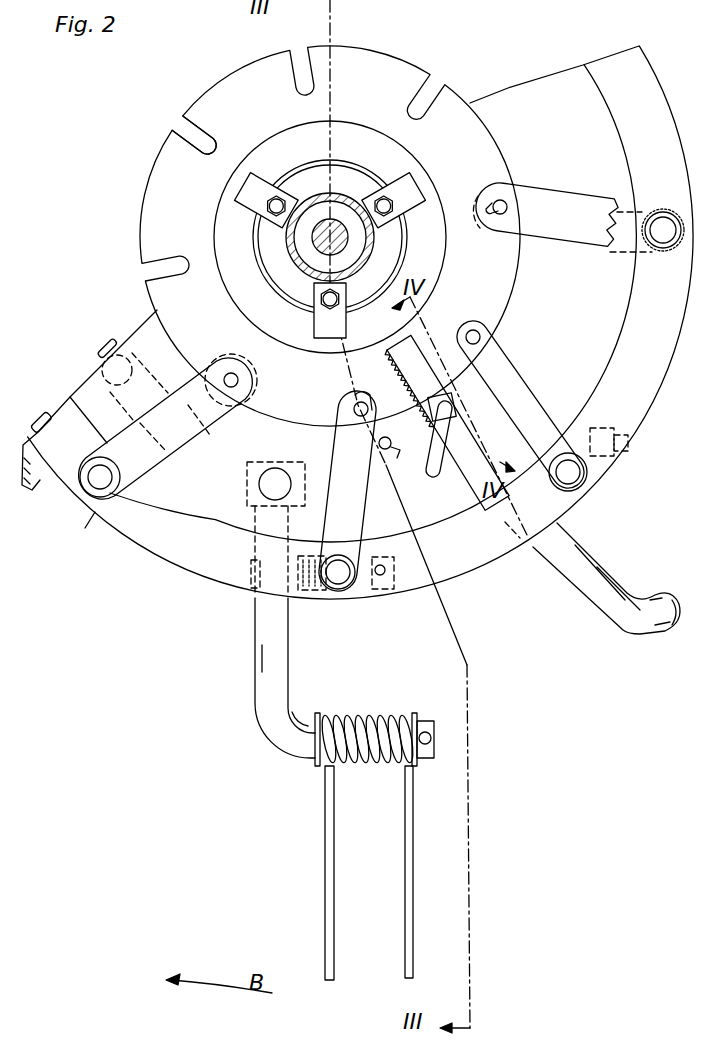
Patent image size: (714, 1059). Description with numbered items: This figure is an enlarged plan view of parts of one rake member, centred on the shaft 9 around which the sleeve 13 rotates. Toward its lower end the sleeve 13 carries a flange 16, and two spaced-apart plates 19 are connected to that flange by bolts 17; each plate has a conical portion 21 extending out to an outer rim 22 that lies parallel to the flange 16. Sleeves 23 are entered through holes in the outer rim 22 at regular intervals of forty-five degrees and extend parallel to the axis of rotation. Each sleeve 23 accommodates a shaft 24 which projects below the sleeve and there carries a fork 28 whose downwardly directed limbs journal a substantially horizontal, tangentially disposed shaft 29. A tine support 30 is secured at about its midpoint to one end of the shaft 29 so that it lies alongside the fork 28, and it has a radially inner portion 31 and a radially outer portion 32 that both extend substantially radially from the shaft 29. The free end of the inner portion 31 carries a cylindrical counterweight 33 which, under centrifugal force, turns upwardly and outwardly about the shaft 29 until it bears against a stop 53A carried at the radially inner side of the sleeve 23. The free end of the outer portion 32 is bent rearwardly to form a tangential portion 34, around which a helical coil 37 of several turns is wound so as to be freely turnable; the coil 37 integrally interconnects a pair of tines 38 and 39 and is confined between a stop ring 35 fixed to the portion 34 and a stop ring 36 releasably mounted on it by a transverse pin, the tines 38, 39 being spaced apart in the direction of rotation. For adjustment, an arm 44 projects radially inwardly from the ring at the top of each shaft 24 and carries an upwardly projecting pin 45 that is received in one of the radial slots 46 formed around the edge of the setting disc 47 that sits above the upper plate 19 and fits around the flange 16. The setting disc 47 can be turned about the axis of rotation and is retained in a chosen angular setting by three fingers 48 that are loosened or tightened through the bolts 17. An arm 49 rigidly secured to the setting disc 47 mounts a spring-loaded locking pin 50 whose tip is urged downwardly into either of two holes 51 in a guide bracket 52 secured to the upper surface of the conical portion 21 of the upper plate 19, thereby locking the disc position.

The shaft 9 is at (313, 238).
The sleeve 13 is at (318, 272).
The flange 16 is at (400, 247).
The bolts 17 is at (268, 231).
The plates 19 is at (138, 322).
The conical portion 21 is at (546, 92).
The outer rim 22 is at (676, 355).
The sleeve 23 is at (658, 250).
The shaft 24 is at (89, 531).
The fork 28 is at (370, 600).
The shaft 29 is at (615, 444).
The tine support 30 is at (254, 683).
The support portion 31 is at (66, 395).
The support portion 32 is at (585, 606).
The counterweight 33 is at (245, 466).
The portion 34 is at (436, 742).
The stop ring 35 is at (315, 773).
The stop ring 36 is at (414, 714).
The helical coil 37 is at (372, 710).
The tine 38 is at (403, 898).
The tine 39 is at (323, 912).
The arm 44 is at (567, 195).
The pin 45 is at (512, 215).
The radial slots 46 is at (206, 129).
The setting disc 47 is at (150, 180).
The fingers 48 is at (243, 199).
The arm 49 is at (486, 512).
The locking pin 50 is at (435, 476).
The holes 51 is at (392, 452).
The guide bracket 52 is at (367, 400).
The stop 53A is at (150, 460).